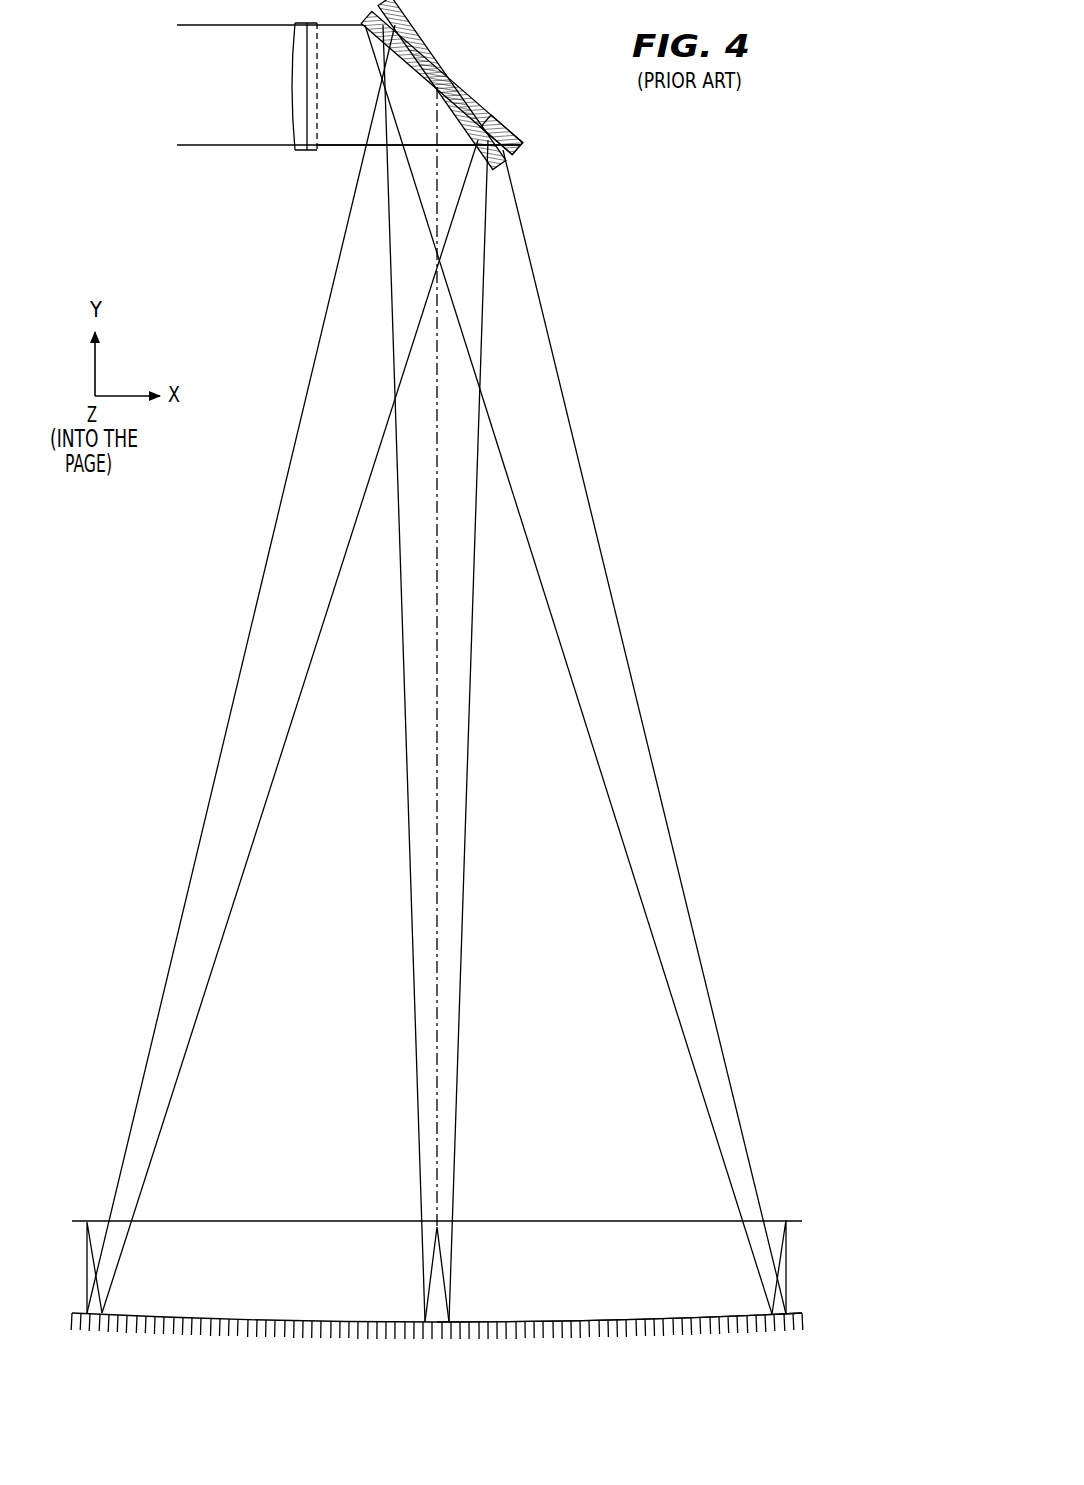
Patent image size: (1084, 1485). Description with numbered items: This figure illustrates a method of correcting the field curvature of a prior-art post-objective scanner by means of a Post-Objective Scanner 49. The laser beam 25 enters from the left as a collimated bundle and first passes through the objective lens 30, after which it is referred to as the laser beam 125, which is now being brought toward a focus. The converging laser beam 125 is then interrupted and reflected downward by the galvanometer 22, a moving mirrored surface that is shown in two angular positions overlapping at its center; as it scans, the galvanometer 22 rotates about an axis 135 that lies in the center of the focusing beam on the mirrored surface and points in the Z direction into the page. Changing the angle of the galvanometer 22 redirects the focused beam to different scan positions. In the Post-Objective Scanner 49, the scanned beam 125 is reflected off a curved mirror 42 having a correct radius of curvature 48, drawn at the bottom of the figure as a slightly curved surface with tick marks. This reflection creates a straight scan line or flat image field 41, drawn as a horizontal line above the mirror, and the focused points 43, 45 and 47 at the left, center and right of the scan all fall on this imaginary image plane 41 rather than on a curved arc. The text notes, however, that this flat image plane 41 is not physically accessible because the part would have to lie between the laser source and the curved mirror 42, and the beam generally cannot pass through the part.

The laser beam 25 is at (232, 26).
The laser beam after lens 125 is at (352, 146).
The objective lens 30 is at (302, 152).
The axis 135 is at (455, 83).
The galvanometer 22 is at (525, 164).
The Post-Objective Scanner 49 is at (648, 415).
The flat image field 41 is at (272, 1221).
The focused point 43 is at (86, 1205).
The focused point 45 is at (445, 1205).
The focused point 47 is at (788, 1203).
The radius of curvature 48 is at (238, 1314).
The curved mirror 42 is at (610, 1320).